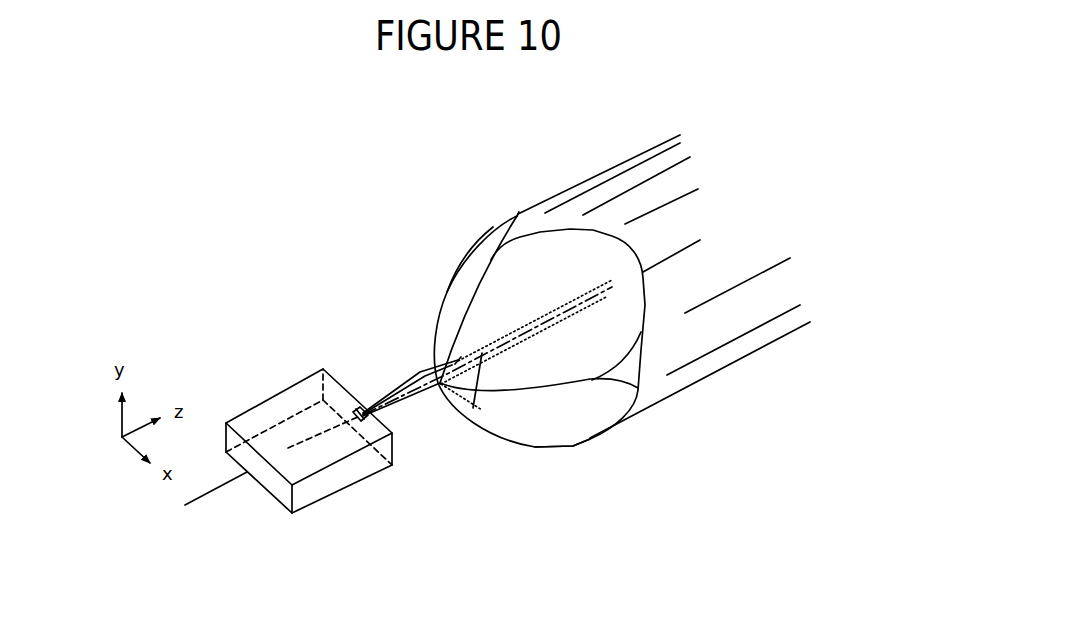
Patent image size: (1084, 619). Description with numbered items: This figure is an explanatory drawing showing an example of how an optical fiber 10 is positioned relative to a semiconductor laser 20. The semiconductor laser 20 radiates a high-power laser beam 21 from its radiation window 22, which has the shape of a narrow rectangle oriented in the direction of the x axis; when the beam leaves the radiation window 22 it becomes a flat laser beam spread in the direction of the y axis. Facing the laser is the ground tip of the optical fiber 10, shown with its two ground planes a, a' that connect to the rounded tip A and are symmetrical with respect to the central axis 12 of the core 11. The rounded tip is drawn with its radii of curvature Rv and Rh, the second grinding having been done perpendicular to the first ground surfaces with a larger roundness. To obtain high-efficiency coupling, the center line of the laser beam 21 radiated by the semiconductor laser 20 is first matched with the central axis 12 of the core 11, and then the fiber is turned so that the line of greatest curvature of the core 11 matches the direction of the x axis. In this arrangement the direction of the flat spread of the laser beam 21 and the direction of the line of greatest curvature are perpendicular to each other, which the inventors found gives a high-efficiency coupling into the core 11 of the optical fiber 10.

The optical fiber 10 is at (613, 153).
The core 11 is at (577, 290).
The central axis 12 is at (664, 258).
The semiconductor laser 20 is at (247, 417).
The laser beam 21 is at (420, 372).
The radiation window 22 is at (356, 410).
The tip ridge of lens A is at (543, 243).
The plane a is at (590, 452).
The plane a' is at (470, 252).
The vertical radius of curvature Rv is at (455, 362).
The horizontal radius of curvature Rh is at (475, 381).